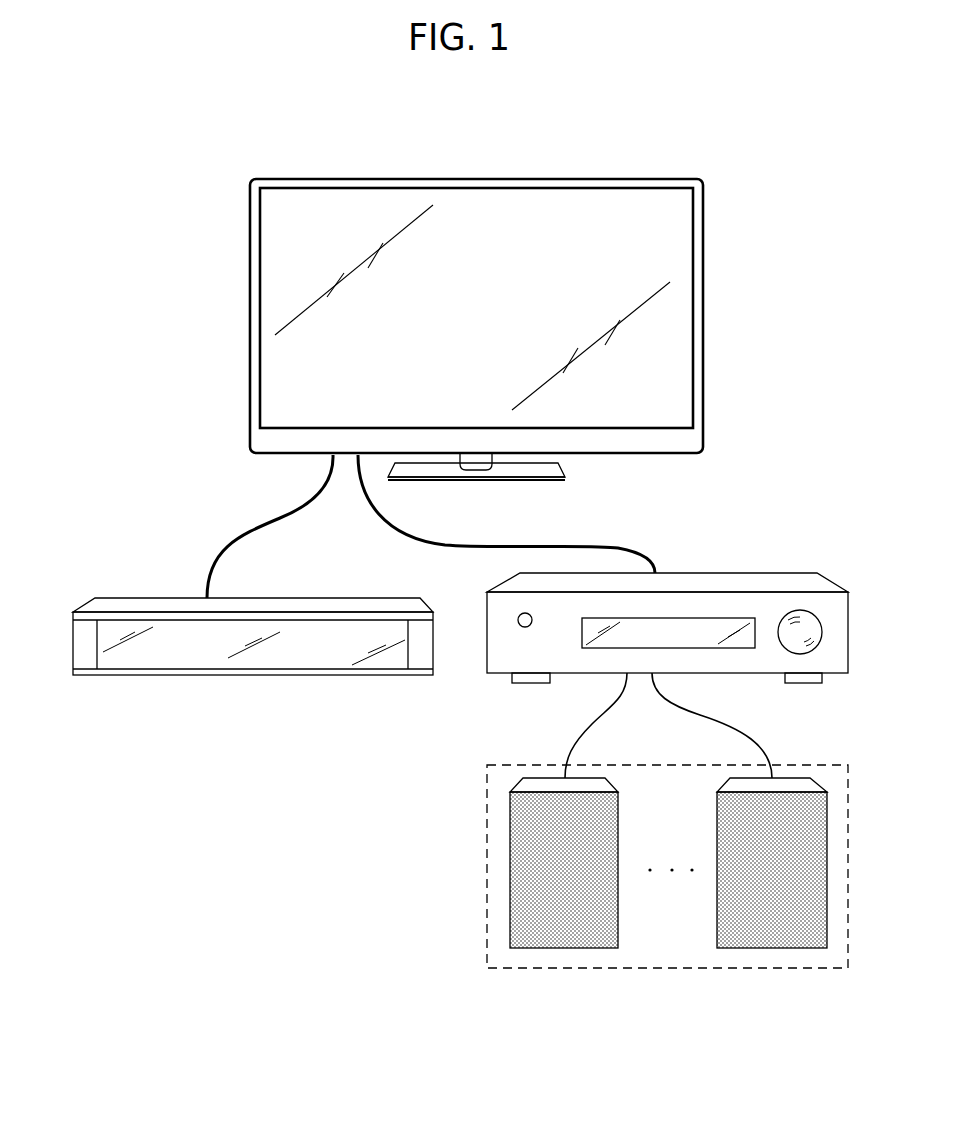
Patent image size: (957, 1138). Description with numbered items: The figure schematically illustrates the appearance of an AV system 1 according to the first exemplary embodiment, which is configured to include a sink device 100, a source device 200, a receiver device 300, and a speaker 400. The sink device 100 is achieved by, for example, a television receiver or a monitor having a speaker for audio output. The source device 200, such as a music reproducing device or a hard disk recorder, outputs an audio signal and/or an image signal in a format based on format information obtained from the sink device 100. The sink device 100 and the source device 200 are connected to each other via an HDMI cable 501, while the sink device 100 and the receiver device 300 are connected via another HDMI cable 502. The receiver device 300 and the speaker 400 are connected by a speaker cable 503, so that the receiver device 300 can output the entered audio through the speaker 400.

The AV system 1 is at (749, 169).
The sink device 100 is at (553, 178).
The source device 200 is at (312, 598).
The receiver device 300 is at (773, 556).
The speaker 400 is at (797, 765).
The HDMI cable 501 is at (278, 520).
The HDMI cable 502 is at (452, 541).
The speaker cable 503 is at (600, 717).